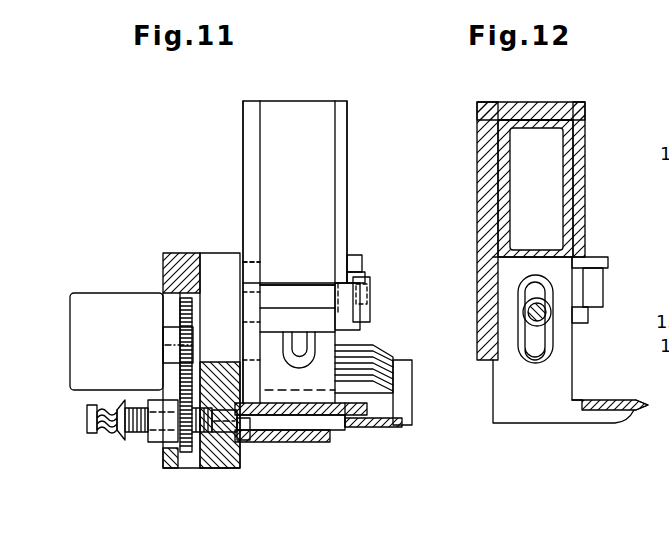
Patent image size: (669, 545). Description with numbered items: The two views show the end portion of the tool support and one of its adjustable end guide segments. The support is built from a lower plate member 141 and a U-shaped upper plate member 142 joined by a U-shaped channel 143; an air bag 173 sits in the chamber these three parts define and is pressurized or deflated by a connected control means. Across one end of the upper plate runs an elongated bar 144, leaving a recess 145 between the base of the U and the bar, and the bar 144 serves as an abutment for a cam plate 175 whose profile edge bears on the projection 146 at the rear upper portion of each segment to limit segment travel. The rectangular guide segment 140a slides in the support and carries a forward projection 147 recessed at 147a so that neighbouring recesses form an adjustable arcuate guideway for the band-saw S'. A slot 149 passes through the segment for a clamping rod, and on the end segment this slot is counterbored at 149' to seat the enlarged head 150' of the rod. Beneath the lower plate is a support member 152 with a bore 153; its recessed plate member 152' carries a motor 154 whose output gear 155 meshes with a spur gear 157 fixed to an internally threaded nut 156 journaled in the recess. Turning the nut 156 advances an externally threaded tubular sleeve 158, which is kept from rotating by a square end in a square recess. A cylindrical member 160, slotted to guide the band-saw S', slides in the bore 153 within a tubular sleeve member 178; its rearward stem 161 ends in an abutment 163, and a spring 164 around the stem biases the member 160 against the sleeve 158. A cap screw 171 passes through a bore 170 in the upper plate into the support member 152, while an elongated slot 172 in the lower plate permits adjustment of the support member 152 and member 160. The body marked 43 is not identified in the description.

In FIG. 11, the block 43 is at (310, 156).
In FIG. 11, the plate member 141 is at (246, 121).
In FIG. 12, the plate member 141 is at (484, 148).
In FIG. 11, the U-shaped upper plate member 142 is at (348, 121).
In FIG. 12, the U-shaped upper plate member 142 is at (580, 122).
In FIG. 12, the U-shaped channel 143 is at (512, 110).
In FIG. 11, the elongated bar 144 is at (361, 328).
In FIG. 12, the elongated bar 144 is at (588, 318).
In FIG. 12, the recess 145 is at (572, 218).
In FIG. 12, the projection 146 is at (606, 262).
In FIG. 12, the projection 147 is at (600, 425).
In FIG. 12, the recess 147a is at (600, 400).
In FIG. 12, the slot 149 is at (496, 319).
In FIG. 12, the counterbore 149' is at (495, 368).
In FIG. 12, the enlarged head 150' is at (495, 312).
In FIG. 11, the support member 152 is at (203, 338).
In FIG. 11, the plate member 152' is at (148, 358).
In FIG. 11, the bore 153 is at (272, 440).
In FIG. 11, the motor 154 is at (76, 293).
In FIG. 11, the output gear 155 is at (181, 311).
In FIG. 11, the internally threaded nut 156 is at (160, 406).
In FIG. 11, the spur gear 157 is at (186, 445).
In FIG. 11, the externally threaded tubular sleeve 158 is at (214, 462).
In FIG. 11, the cylindrical member 160 is at (352, 432).
In FIG. 11, the stem 161 is at (96, 436).
In FIG. 11, the abutment 163 is at (92, 422).
In FIG. 11, the spring 164 is at (100, 398).
In FIG. 11, the bore 170 is at (360, 286).
In FIG. 11, the cap screw 171 is at (322, 292).
In FIG. 11, the elongated slot 172 is at (262, 262).
In FIG. 12, the air bag 173 is at (537, 123).
In FIG. 12, the cam plate 175 is at (603, 290).
In FIG. 11, the tubular sleeve member 178 is at (328, 445).
In FIG. 12, the guide segment 140a is at (566, 417).
In FIG. 11, the band-saw S' is at (391, 385).
In FIG. 12, the band-saw S' is at (633, 396).